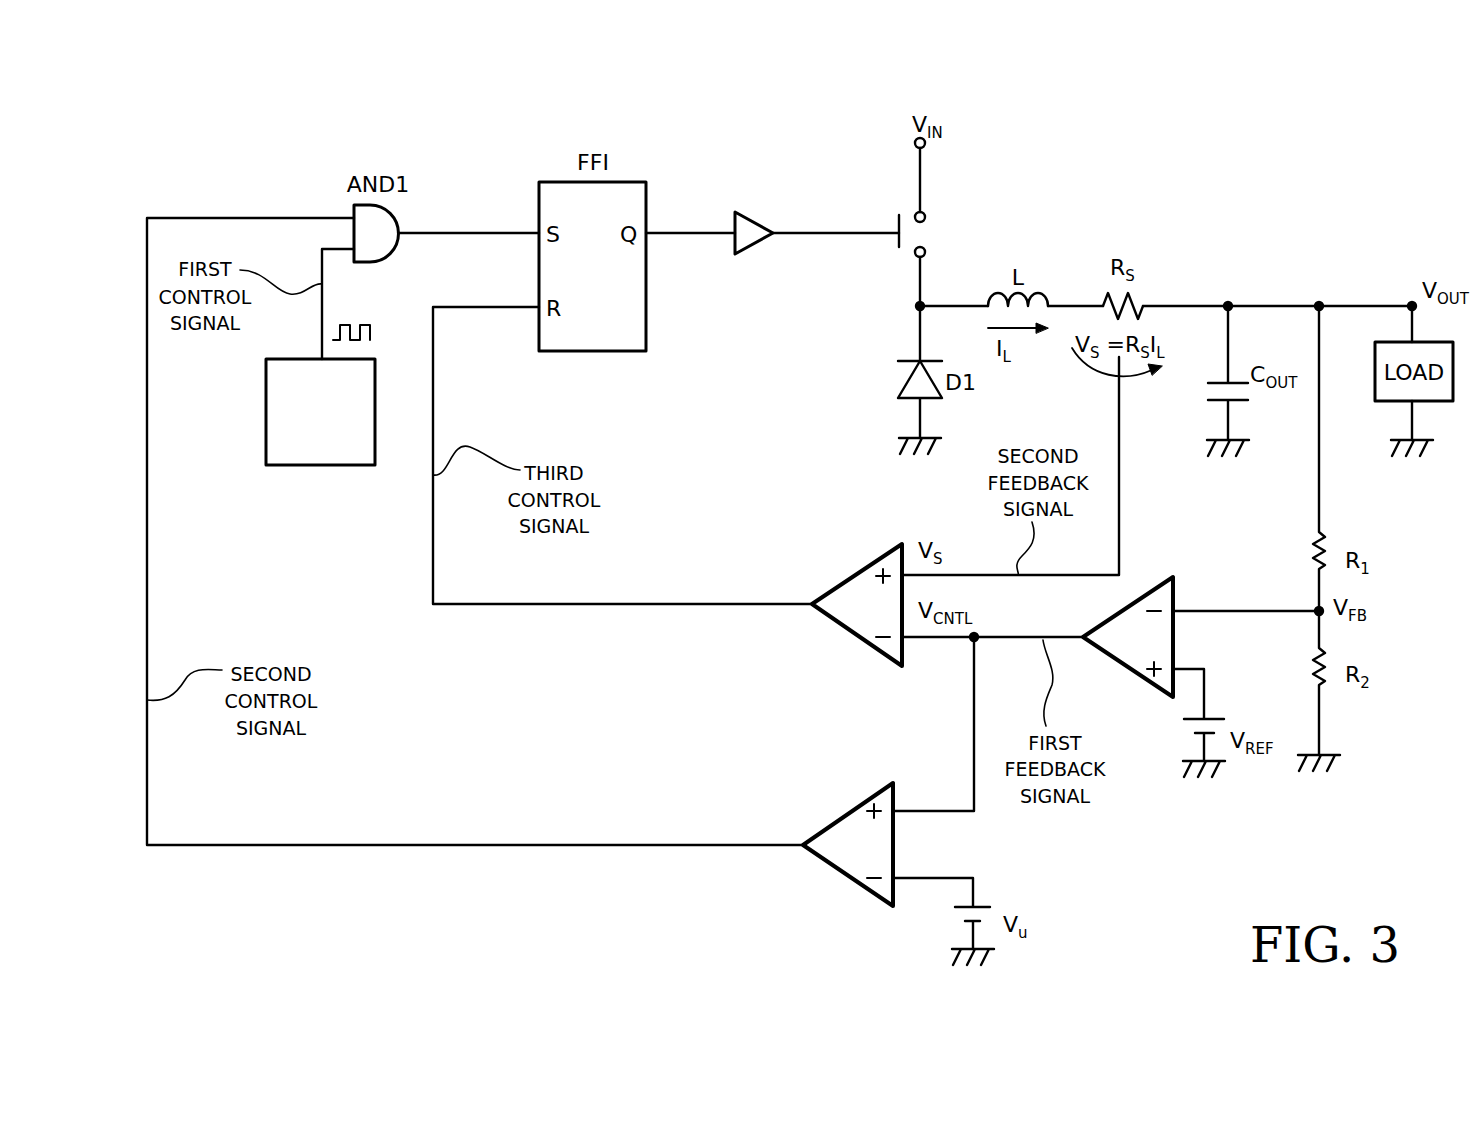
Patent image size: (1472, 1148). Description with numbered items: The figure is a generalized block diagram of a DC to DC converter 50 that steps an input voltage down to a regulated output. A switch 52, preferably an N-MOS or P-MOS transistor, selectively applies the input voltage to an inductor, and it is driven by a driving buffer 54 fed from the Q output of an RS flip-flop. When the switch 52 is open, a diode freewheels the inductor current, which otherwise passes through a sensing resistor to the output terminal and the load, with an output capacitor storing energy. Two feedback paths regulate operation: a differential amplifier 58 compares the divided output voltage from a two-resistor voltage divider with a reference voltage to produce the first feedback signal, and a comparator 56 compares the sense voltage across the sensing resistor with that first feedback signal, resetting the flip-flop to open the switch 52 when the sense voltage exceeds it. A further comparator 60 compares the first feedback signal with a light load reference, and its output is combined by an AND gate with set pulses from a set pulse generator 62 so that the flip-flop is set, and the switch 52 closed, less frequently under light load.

The DC to DC converter 50 is at (1122, 192).
The switch 52 is at (898, 222).
The driving buffer 54 is at (748, 214).
The comparator 56 is at (866, 562).
The differential amplifier 58 is at (1141, 679).
The comparator 60 is at (858, 809).
The set pulse generator 62 is at (320, 395).